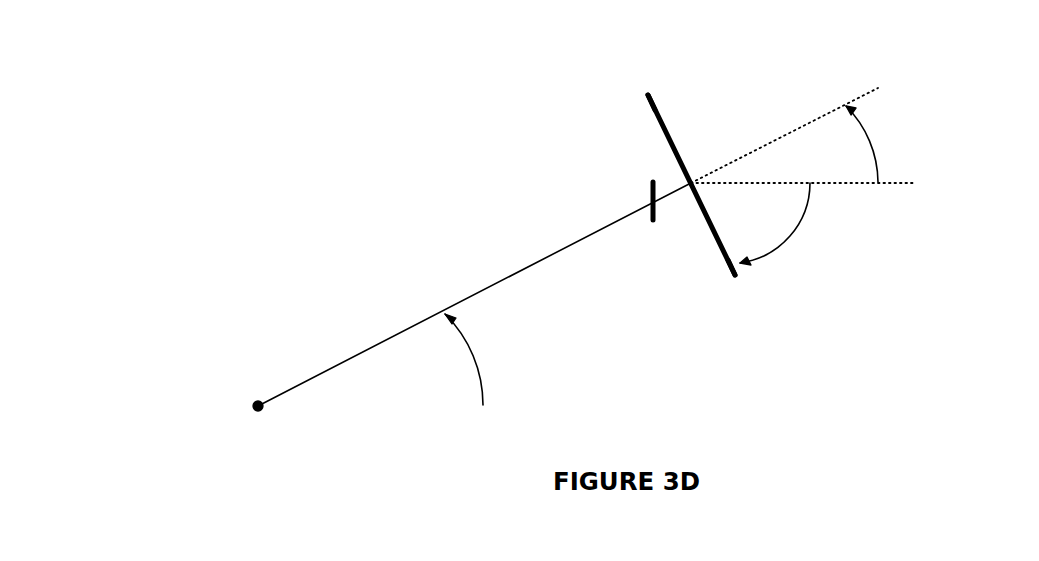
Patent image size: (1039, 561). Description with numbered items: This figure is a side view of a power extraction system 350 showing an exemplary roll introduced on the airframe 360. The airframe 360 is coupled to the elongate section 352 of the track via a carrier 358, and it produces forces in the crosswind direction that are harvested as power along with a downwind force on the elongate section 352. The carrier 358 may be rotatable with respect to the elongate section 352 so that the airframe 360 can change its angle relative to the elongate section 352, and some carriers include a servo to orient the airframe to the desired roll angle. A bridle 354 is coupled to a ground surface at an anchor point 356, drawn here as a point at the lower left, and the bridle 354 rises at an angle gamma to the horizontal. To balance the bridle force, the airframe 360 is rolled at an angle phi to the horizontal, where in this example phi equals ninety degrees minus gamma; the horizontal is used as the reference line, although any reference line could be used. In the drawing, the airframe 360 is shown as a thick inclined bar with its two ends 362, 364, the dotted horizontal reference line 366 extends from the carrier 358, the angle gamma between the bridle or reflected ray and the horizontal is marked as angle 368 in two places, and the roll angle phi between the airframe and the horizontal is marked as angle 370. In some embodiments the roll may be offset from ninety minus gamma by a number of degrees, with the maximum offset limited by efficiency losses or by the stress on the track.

The power extraction system 350 is at (282, 102).
The elongate section 352 is at (652, 216).
The bridle 354 is at (483, 290).
The anchor point 356 is at (256, 404).
The carrier 358 is at (686, 182).
The airframe 360 is at (668, 127).
The first end of mirror 362 is at (648, 95).
The second end of mirror 364 is at (735, 275).
The horizontal reference axis 366 is at (913, 182).
The angle gamma 368 is at (639, 246).
The angle phi 370 is at (763, 224).